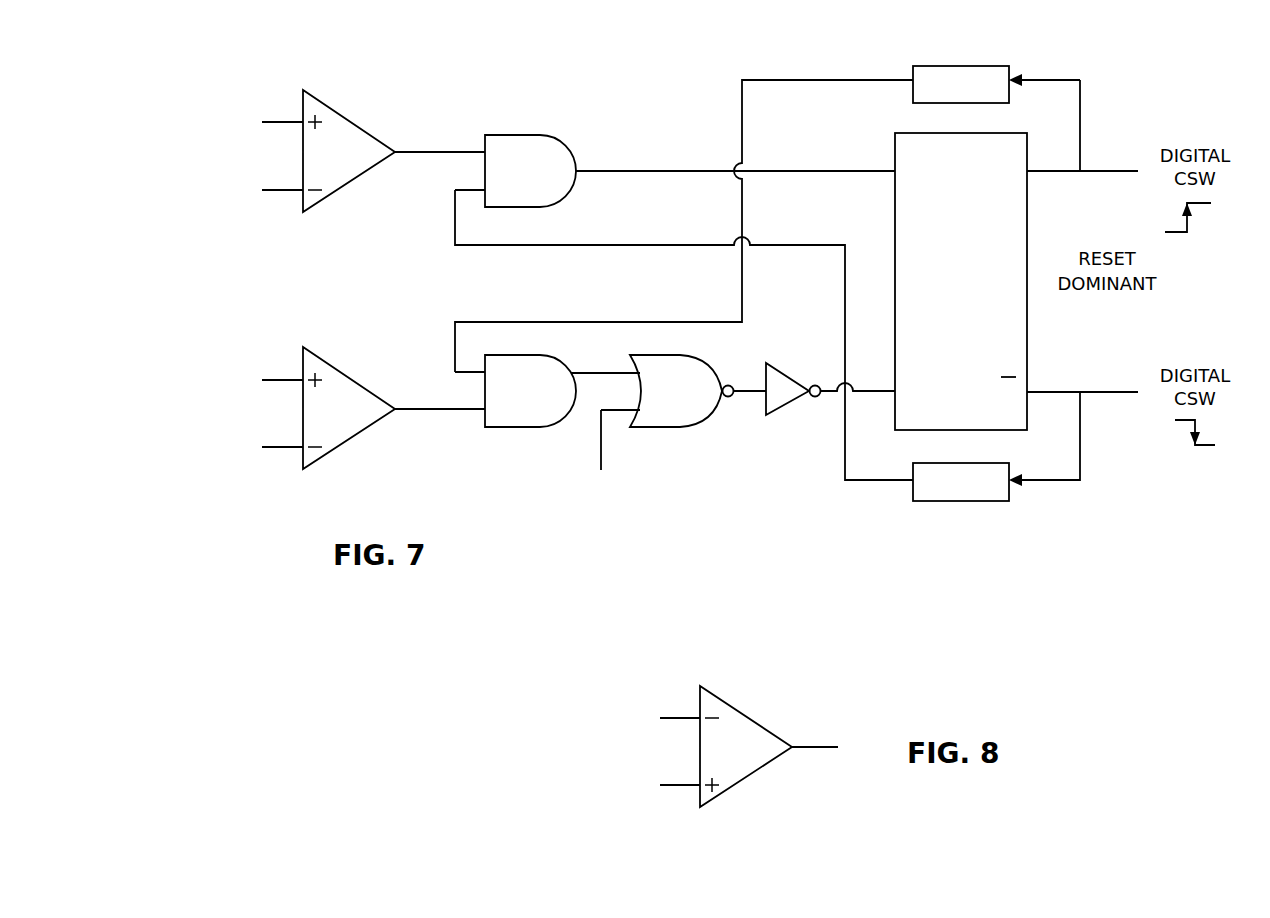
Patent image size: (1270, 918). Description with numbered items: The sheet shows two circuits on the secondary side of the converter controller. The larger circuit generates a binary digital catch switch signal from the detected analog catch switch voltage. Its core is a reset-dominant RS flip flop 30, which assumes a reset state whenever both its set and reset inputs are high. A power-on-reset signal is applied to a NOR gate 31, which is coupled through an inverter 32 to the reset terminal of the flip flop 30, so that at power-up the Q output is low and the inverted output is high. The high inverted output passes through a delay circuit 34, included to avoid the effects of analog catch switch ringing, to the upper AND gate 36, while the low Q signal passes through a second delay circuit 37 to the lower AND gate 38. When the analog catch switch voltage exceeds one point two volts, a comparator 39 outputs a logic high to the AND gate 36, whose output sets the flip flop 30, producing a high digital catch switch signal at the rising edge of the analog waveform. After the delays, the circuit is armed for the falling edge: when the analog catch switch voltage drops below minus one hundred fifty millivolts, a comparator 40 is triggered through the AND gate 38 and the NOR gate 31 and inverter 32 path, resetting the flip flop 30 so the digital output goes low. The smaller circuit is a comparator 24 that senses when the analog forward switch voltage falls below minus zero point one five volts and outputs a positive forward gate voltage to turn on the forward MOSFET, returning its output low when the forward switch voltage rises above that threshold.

In FIG. 8, the comparator 24 is at (755, 718).
In FIG. 7, the RS flip flop 30 is at (952, 278).
In FIG. 7, the NOR gate 31 is at (648, 429).
In FIG. 7, the inverter 32 is at (782, 410).
In FIG. 7, the delay circuit 34 is at (948, 502).
In FIG. 7, the upper AND gate 36 is at (515, 135).
In FIG. 7, the delay circuit 37 is at (947, 66).
In FIG. 7, the lower AND gate 38 is at (515, 428).
In FIG. 7, the comparator 39 is at (356, 123).
In FIG. 7, the comparator 40 is at (357, 432).